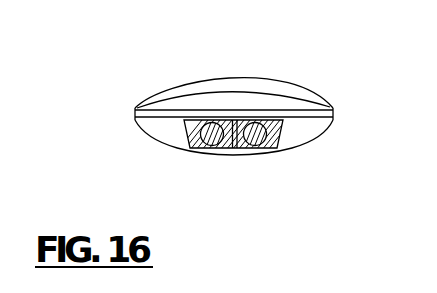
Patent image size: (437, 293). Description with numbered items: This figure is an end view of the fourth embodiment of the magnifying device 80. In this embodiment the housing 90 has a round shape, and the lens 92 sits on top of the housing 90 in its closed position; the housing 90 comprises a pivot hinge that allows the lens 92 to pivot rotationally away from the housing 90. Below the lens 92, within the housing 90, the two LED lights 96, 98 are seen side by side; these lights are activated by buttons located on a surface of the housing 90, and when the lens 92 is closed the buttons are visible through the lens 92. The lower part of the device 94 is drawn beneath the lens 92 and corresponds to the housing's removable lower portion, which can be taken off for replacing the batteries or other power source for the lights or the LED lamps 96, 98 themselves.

The magnifying device 80 is at (240, 157).
The housing 90 is at (334, 114).
The lens 92 is at (258, 82).
The housing bowl 94 is at (305, 138).
The LED light 96 is at (217, 144).
The LED light 98 is at (249, 144).